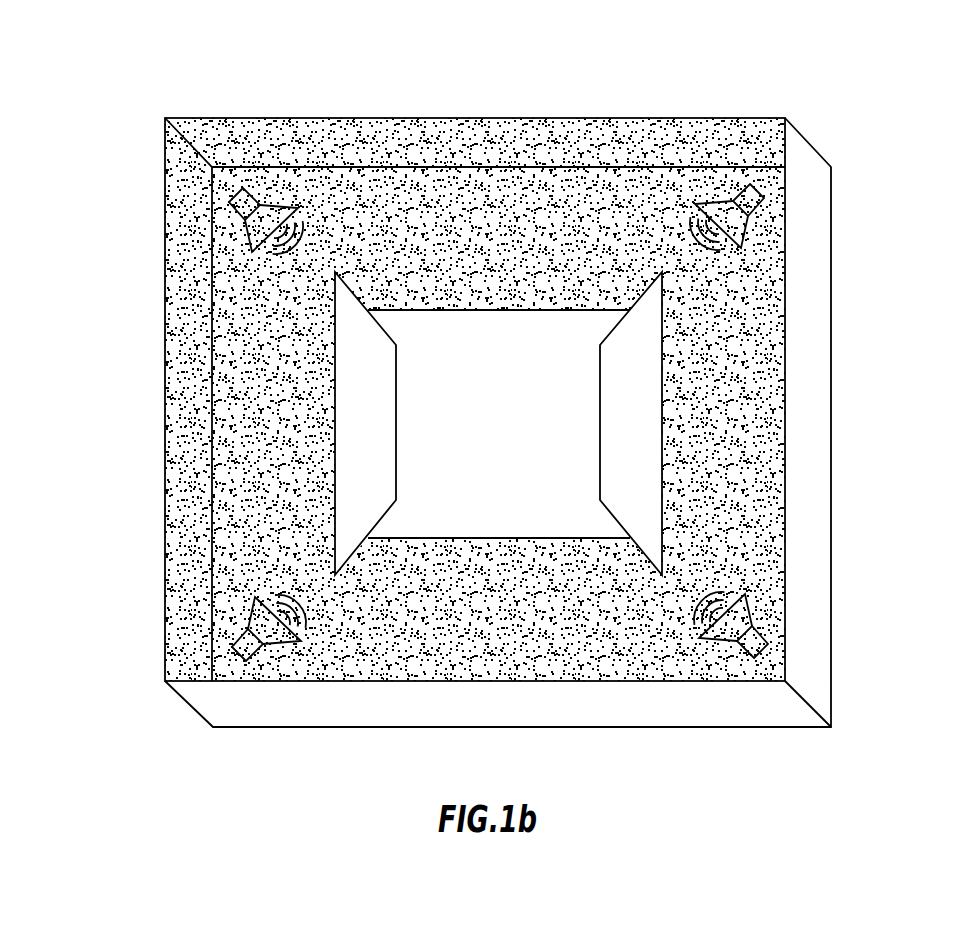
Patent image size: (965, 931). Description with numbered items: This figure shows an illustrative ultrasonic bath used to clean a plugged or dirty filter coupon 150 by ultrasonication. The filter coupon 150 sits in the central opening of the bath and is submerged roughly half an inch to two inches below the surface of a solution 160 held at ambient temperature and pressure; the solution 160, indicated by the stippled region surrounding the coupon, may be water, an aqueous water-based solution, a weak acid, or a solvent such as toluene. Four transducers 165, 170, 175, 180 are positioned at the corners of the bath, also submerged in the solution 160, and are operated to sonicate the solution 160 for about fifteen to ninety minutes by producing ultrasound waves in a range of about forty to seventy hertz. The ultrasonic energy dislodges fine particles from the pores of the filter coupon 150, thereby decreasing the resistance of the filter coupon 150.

The solution 160 is at (265, 87).
The filter coupon 150 is at (452, 548).
The transducer 165 is at (222, 199).
The transducer 170 is at (224, 650).
The transducer 175 is at (777, 194).
The transducer 180 is at (778, 658).